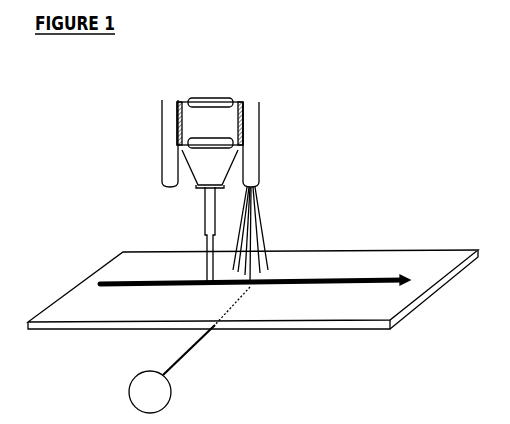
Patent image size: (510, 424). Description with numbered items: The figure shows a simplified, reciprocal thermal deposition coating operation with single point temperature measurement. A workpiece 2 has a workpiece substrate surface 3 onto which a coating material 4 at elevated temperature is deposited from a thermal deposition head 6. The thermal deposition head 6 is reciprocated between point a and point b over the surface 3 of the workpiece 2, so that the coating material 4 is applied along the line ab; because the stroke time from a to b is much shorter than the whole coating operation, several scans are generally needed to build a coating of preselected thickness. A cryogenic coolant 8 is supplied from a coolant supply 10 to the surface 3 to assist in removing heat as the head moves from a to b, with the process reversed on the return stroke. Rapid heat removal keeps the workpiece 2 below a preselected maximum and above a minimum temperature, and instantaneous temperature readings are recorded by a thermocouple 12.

The workpiece 2 is at (390, 248).
The workpiece substrate surface 3 is at (150, 288).
The coating material 4 is at (205, 242).
The thermal deposition head 6 is at (218, 117).
The cryogenic coolant 8 is at (273, 230).
The coolant supply 10 is at (167, 125).
The thermocouple 12 is at (262, 283).